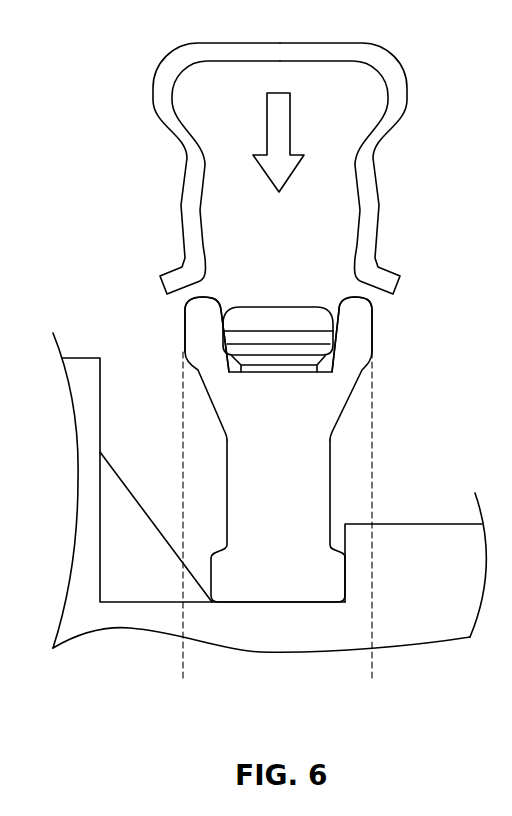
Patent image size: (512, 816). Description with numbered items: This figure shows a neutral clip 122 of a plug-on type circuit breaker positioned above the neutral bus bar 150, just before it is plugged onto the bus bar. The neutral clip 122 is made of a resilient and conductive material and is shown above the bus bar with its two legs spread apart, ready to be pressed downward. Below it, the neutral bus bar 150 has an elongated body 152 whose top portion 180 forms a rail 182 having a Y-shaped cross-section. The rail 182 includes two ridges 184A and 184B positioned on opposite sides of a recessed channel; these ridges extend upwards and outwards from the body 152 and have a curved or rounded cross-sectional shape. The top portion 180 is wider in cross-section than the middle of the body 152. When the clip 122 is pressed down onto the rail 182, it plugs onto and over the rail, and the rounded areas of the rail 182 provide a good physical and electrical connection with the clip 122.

The neutral clip 122 is at (400, 117).
The neutral bus bar 150 is at (208, 579).
The elongated body 152 is at (320, 488).
The top portion 180 is at (293, 368).
The rail 182 is at (372, 685).
The ridge 184A is at (200, 341).
The ridge 184B is at (365, 377).